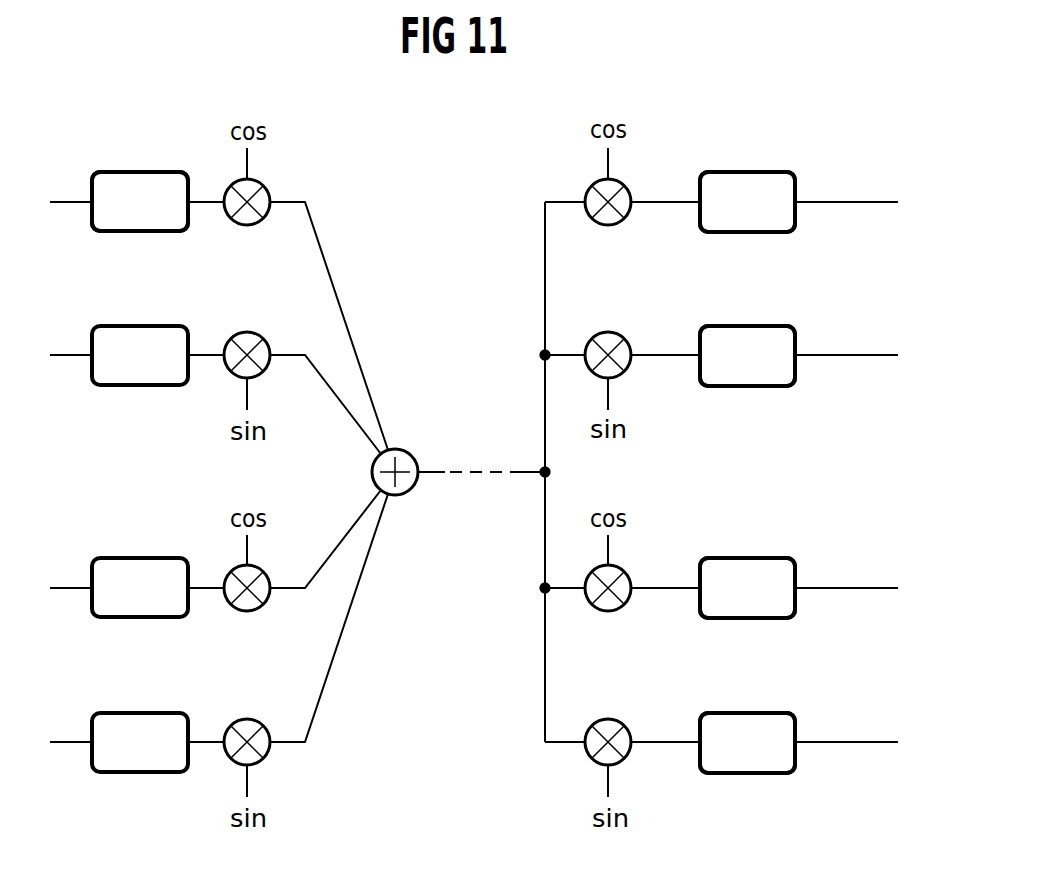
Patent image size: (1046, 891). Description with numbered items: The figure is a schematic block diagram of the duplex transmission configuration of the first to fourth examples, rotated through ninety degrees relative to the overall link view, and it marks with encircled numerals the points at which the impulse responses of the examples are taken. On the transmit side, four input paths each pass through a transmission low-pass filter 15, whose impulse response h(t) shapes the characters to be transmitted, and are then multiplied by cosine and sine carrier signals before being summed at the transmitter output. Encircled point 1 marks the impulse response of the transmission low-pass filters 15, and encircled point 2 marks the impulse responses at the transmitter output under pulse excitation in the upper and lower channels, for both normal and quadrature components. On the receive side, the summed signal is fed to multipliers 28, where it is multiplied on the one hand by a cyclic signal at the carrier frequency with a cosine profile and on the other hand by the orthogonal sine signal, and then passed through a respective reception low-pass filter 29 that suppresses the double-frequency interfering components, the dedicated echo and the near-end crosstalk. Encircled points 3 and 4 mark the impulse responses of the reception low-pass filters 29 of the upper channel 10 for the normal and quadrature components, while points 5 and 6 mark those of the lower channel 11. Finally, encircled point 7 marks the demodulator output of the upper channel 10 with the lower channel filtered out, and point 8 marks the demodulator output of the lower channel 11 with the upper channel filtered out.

The impulse response measurement point 1 is at (168, 182).
The impulse response measurement point 2 is at (443, 471).
The impulse response measurement point 3 is at (718, 182).
The impulse response measurement point 4 is at (718, 336).
The impulse response measurement point 5 is at (718, 568).
The impulse response measurement point 6 is at (718, 723).
The impulse response measurement point 7 is at (852, 202).
The impulse response measurement point 8 is at (852, 588).
The upper channel 10 is at (904, 285).
The lower channel 11 is at (907, 677).
The low-pass filter 15 is at (118, 172).
The multiplier 28 is at (625, 185).
The low-pass filter 29 is at (773, 172).